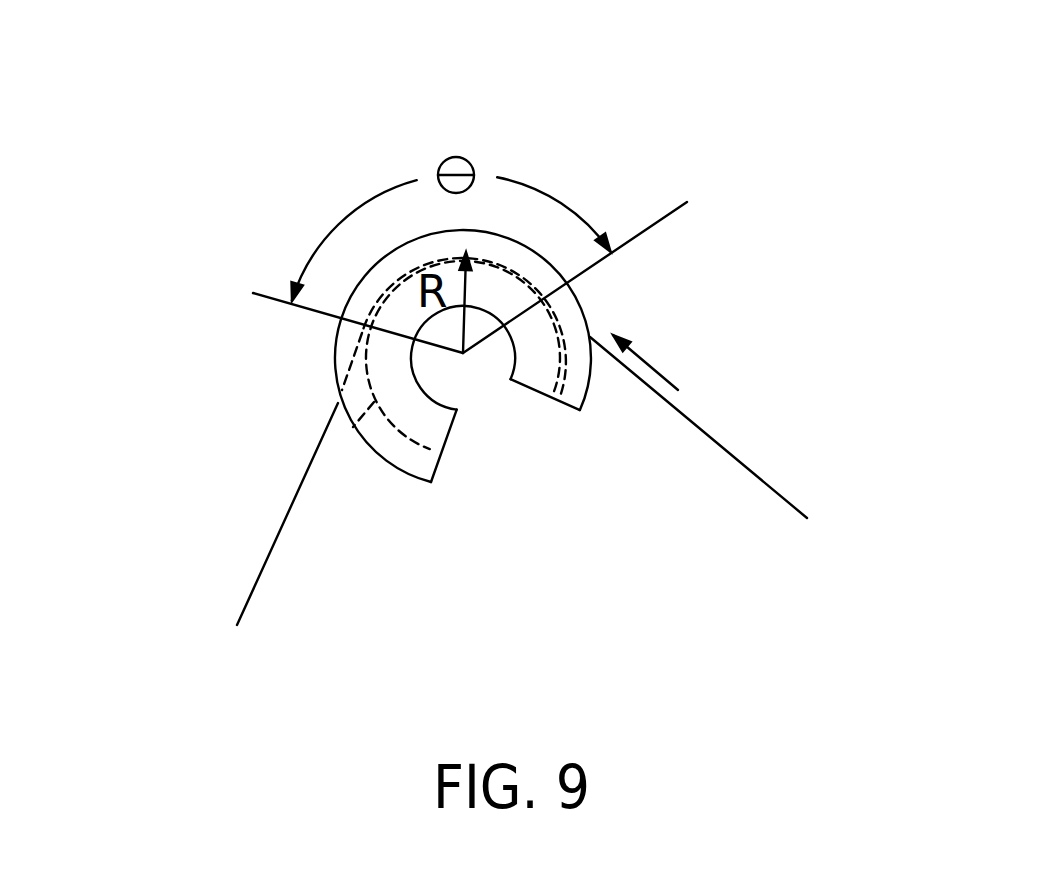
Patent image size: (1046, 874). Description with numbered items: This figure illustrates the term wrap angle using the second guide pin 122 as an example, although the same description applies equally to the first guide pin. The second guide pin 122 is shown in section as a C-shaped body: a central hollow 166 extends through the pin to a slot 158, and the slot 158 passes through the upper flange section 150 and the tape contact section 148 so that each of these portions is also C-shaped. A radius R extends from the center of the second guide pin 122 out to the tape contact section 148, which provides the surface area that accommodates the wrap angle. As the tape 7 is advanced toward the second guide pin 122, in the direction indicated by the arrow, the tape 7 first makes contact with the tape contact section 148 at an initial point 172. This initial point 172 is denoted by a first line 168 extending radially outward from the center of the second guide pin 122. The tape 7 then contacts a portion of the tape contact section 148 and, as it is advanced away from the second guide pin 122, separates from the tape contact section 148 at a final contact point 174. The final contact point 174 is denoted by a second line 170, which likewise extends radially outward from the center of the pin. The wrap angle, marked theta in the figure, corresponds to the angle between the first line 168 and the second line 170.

The second guide pin 122 is at (585, 110).
The tape contact section 148 is at (352, 427).
The upper flange section 150 is at (577, 392).
The slot 158 is at (517, 412).
The hollow 166 is at (478, 362).
The first line 168 is at (650, 230).
The second line 170 is at (253, 293).
The initial point 172 is at (560, 291).
The final contact point 174 is at (363, 328).
The tape 7 is at (733, 452).